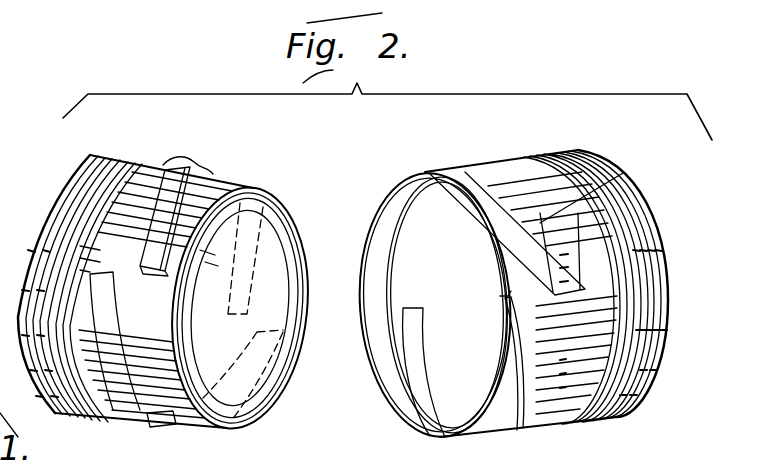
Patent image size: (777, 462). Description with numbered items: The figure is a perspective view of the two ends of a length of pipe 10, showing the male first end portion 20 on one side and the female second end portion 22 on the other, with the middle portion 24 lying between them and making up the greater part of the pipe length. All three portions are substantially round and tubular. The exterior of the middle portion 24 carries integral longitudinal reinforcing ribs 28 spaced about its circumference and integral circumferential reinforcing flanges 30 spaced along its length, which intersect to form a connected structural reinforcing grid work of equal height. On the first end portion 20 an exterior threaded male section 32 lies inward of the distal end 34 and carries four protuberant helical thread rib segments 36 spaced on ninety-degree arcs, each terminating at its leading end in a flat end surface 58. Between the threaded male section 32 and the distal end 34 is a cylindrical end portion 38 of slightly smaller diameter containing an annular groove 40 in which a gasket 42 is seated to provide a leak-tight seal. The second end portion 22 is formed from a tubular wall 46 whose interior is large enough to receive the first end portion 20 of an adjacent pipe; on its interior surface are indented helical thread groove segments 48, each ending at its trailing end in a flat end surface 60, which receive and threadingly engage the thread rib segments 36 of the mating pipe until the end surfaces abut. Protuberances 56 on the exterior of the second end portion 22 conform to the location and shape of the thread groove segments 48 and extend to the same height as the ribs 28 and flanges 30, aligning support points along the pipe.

The bushing assembly 10 is at (238, 452).
The first end portion 20 is at (232, 160).
The second end portion 22 is at (499, 156).
The middle portion 24 is at (112, 148).
The longitudinal reinforcing ribs 28 is at (658, 268).
The circumferential reinforcing flanges 30 is at (547, 250).
The threaded male section 32 is at (192, 163).
The distal end 34 is at (280, 185).
The helical thread rib segments 36 is at (147, 221).
The cylindrical end portion 38 is at (160, 323).
The annular groove 40 is at (236, 184).
The gasket 42 is at (208, 243).
The tubular wall 46 is at (403, 173).
The helical thread groove segments 48 is at (423, 176).
The protuberances 56 is at (458, 170).
The flat end surface 58 is at (167, 317).
The flat end surface 60 is at (412, 307).